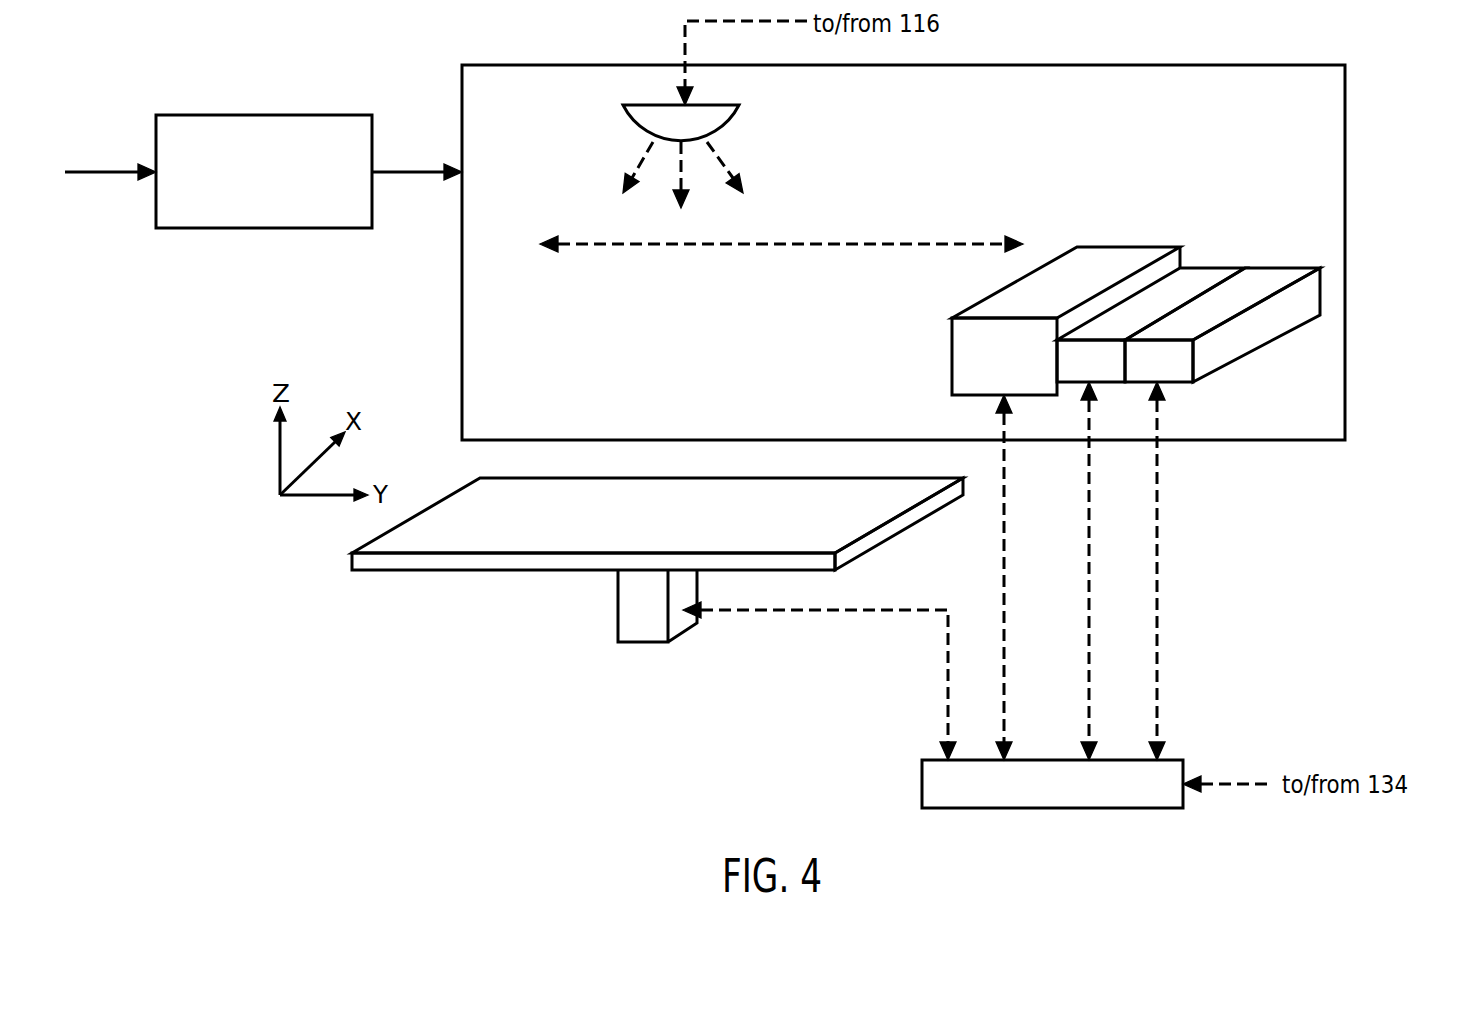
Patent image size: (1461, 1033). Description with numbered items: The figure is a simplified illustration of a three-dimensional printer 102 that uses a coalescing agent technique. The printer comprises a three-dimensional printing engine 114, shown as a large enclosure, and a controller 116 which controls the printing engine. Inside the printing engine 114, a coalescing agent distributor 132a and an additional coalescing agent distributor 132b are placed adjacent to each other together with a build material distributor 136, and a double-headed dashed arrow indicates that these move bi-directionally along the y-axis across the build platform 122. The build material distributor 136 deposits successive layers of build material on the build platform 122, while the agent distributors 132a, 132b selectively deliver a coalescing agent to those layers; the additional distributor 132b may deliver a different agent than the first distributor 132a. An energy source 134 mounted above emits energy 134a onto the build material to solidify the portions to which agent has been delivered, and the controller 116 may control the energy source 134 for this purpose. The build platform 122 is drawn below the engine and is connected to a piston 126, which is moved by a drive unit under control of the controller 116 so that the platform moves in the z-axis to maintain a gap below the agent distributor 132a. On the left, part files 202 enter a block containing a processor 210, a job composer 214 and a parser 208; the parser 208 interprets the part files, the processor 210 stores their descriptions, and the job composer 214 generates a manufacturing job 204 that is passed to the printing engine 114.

The 3D printer 102 is at (296, 620).
The 3D printing engine 114 is at (1345, 250).
The controller 116 is at (1052, 784).
The build platform 122 is at (678, 531).
The piston 126 is at (647, 643).
The coalescing agent distributor 132a is at (1213, 267).
The additional coalescing agent distributor 132b is at (1283, 267).
The energy source 134 is at (737, 120).
The energy 134a is at (640, 165).
The build material distributor 136 is at (1122, 246).
The part files 202 is at (107, 168).
The manufacturing job 204 is at (412, 168).
The parser 208 is at (264, 205).
The processor 210 is at (264, 171).
The job composer 214 is at (244, 172).